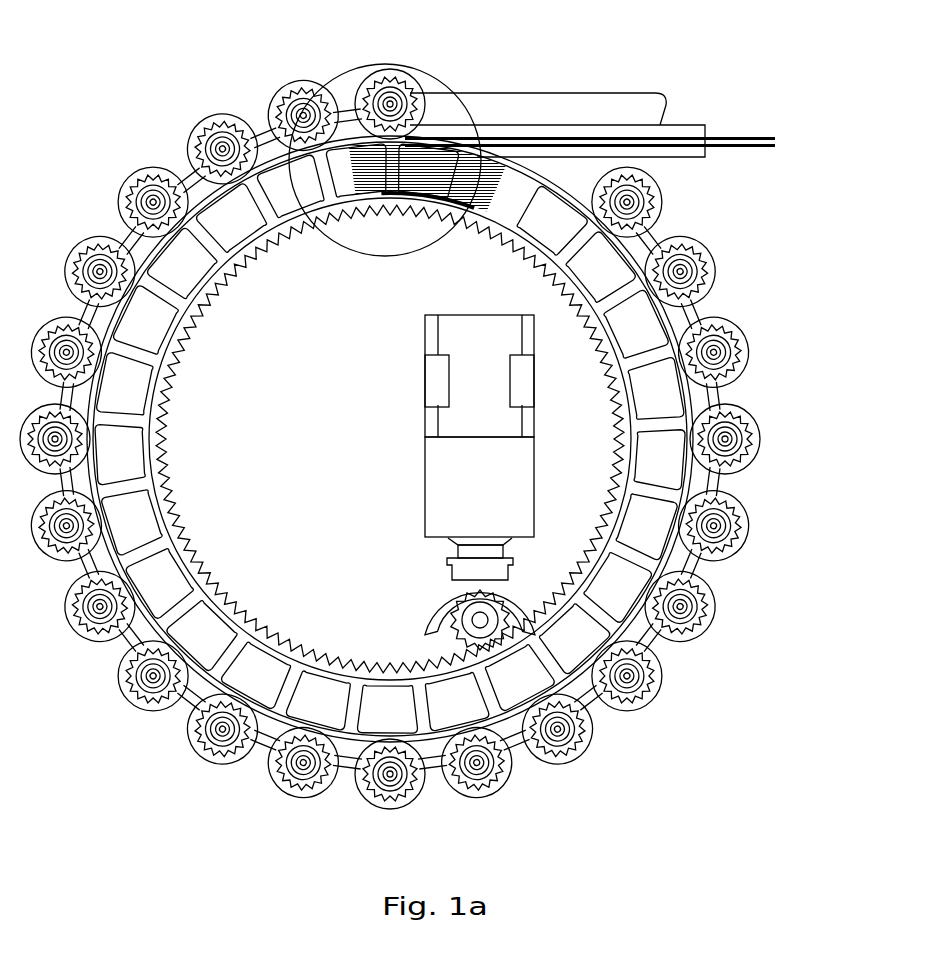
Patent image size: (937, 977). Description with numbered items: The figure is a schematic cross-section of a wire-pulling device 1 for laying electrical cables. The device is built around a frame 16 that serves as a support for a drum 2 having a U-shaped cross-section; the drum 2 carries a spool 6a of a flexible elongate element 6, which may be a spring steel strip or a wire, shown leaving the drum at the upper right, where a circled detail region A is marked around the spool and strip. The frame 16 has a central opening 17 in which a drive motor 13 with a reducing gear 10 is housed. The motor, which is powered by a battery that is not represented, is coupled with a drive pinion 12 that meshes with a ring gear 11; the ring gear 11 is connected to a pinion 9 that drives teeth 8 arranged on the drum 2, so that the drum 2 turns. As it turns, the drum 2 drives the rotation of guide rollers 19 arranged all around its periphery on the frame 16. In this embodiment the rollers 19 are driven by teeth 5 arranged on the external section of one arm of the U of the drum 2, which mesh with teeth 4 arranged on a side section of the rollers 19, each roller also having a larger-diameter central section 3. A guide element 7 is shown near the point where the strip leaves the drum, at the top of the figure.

The wire-pulling device 1 is at (687, 738).
The drum 2 is at (660, 397).
The central section 3 is at (660, 203).
The second side section 4 is at (712, 277).
The teeth 5 is at (590, 697).
The flexible elongate element 6 is at (730, 140).
The spool 6a is at (405, 200).
The guide element 7 is at (405, 200).
The teeth 8 is at (256, 612).
The pinion 9 is at (457, 667).
The reducing gear 10 is at (462, 493).
The ring gear 11 is at (524, 590).
The drive pinion 12 is at (423, 628).
The drive motor 13 is at (467, 347).
The frame 16 is at (663, 650).
The central opening 17 is at (227, 490).
The guide rollers 19 is at (752, 475).
The detail region A is at (463, 103).